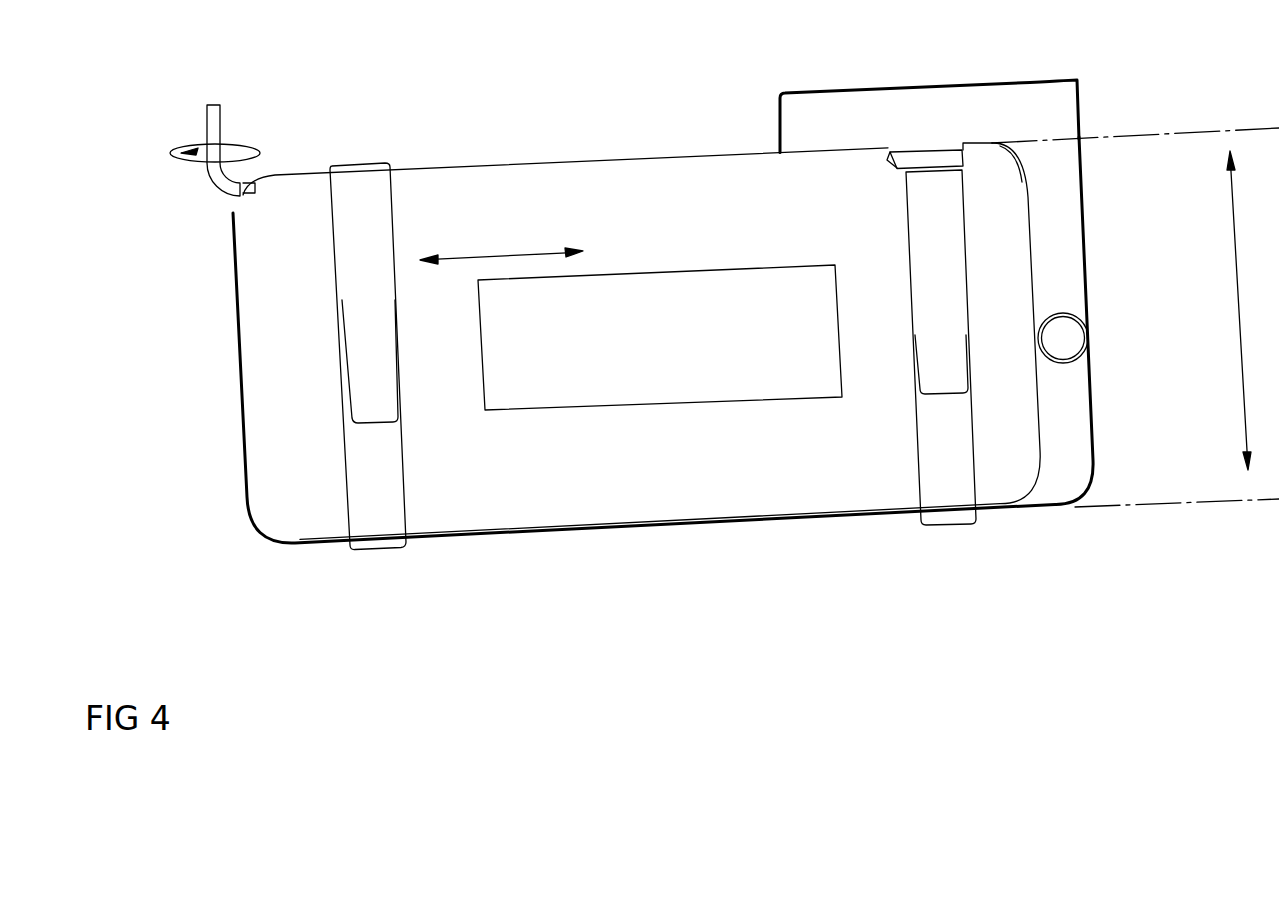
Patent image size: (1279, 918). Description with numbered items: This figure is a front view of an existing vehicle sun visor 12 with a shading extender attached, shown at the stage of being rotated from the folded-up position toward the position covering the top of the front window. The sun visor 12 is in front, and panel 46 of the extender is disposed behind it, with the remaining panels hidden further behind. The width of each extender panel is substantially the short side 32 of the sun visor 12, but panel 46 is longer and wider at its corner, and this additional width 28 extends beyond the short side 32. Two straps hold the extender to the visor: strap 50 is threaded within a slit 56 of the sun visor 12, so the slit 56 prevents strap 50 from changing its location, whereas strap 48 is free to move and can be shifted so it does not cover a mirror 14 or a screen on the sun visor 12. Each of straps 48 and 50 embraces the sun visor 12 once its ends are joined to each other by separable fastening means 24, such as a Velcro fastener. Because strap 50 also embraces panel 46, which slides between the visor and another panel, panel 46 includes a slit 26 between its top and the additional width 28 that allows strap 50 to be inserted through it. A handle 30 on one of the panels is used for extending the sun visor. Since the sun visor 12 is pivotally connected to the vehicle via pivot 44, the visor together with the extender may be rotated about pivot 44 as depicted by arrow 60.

The existing vehicle sun visor 12 is at (470, 197).
The mirror 14 is at (668, 295).
The separable fastening means 24 is at (932, 347).
The slit 26 is at (1005, 150).
The additional width 28 is at (927, 103).
The handle 30 is at (1063, 340).
The short side 32 is at (1135, 317).
The pivot 44 is at (215, 120).
The panel 46 is at (1084, 459).
The strap 48 is at (377, 510).
The strap 50 is at (945, 478).
The slit 56 is at (900, 150).
The arrow 60 is at (215, 174).